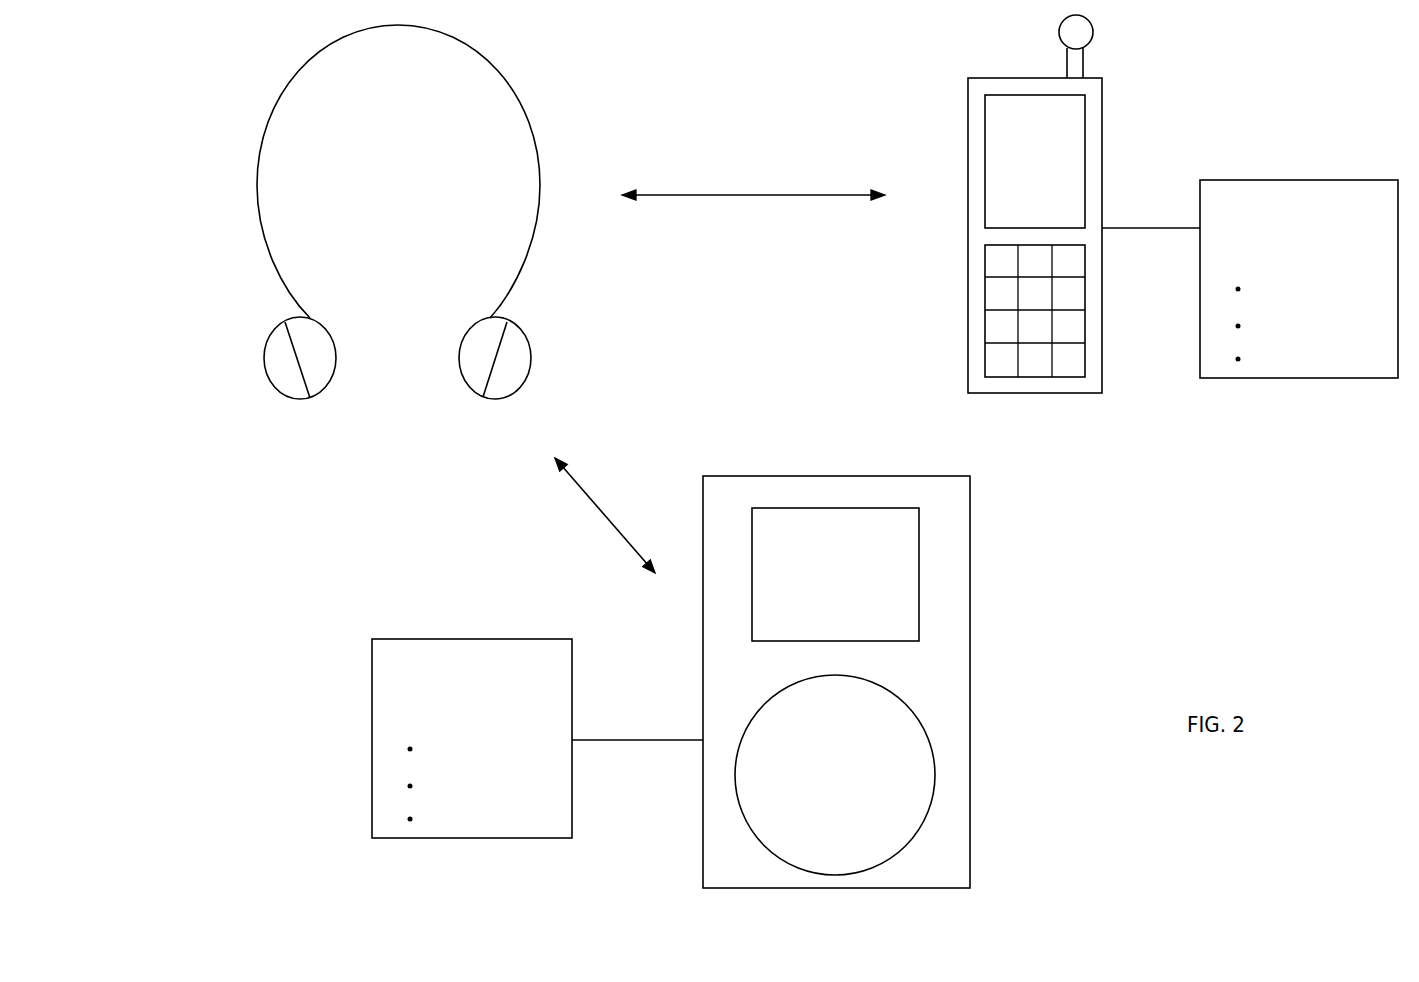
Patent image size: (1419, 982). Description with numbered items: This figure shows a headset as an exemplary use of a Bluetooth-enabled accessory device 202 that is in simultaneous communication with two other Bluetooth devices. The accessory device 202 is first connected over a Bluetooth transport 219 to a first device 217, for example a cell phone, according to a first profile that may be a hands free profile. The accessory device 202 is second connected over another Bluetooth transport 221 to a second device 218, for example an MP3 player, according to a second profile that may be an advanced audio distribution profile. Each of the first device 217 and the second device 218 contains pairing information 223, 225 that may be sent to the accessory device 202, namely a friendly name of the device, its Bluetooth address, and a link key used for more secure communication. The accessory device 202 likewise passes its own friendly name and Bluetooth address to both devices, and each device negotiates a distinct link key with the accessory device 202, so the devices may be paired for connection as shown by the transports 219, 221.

The accessory device 202 is at (285, 90).
The first device 217 is at (1102, 95).
The second device 218 is at (970, 509).
The Bluetooth transport 219 is at (753, 193).
The Bluetooth transport 221 is at (597, 508).
The pairing information 223 is at (1282, 180).
The pairing information 225 is at (438, 638).